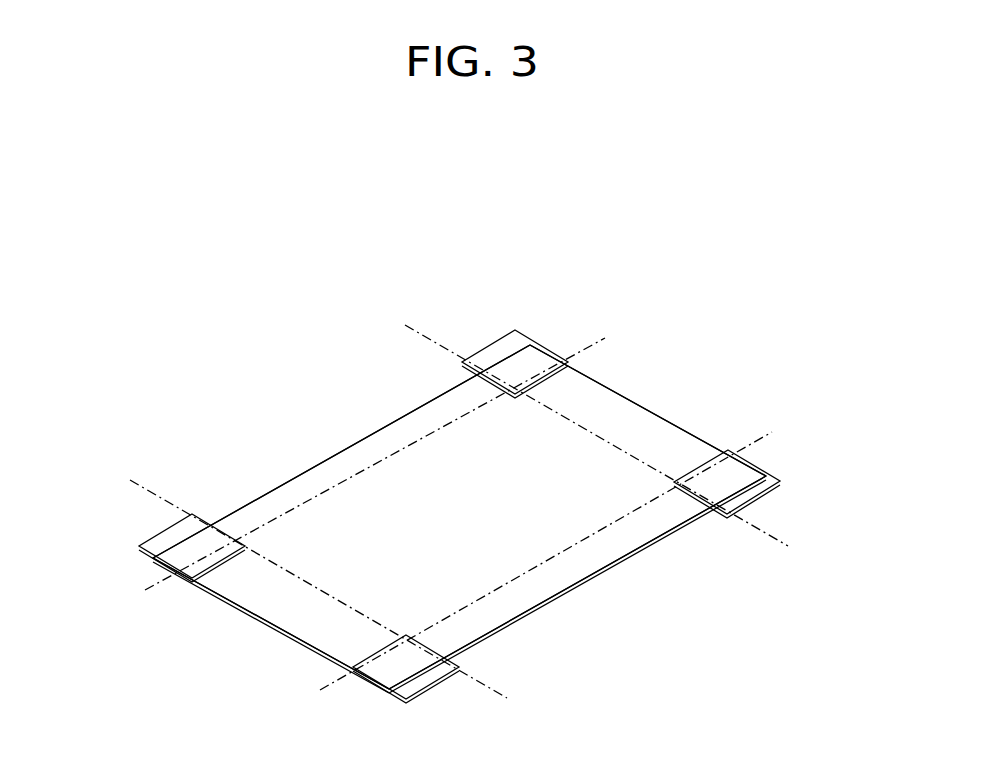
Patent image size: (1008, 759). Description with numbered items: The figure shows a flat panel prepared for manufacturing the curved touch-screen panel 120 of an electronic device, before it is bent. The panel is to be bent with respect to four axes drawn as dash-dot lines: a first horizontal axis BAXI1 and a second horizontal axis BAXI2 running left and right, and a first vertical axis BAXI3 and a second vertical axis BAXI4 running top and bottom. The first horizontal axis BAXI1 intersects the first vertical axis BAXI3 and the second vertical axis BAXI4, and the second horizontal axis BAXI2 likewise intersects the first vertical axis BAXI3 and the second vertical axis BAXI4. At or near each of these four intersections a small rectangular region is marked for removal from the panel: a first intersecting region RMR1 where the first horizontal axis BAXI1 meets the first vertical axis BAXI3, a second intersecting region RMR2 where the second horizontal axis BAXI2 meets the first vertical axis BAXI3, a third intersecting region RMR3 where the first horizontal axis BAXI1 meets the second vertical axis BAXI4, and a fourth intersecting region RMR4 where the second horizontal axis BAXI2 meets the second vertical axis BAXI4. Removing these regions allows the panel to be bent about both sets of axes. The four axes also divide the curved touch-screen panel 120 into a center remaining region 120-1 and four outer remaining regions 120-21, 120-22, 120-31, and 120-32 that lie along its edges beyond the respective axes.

The curved touch-screen panel 120 is at (575, 270).
The center remaining region 120-1 is at (497, 522).
The outer remaining region 120-21 is at (363, 468).
The outer remaining region 120-22 is at (622, 540).
The outer remaining region 120-31 is at (641, 428).
The outer remaining region 120-32 is at (297, 604).
The first intersecting region RMR1 is at (735, 478).
The second intersecting region RMR2 is at (396, 667).
The third intersecting region RMR3 is at (511, 360).
The fourth intersecting region RMR4 is at (197, 551).
The first horizontal axis BAXI1 is at (613, 449).
The second horizontal axis BAXI2 is at (340, 607).
The first vertical axis BAXI3 is at (580, 553).
The second vertical axis BAXI4 is at (410, 455).